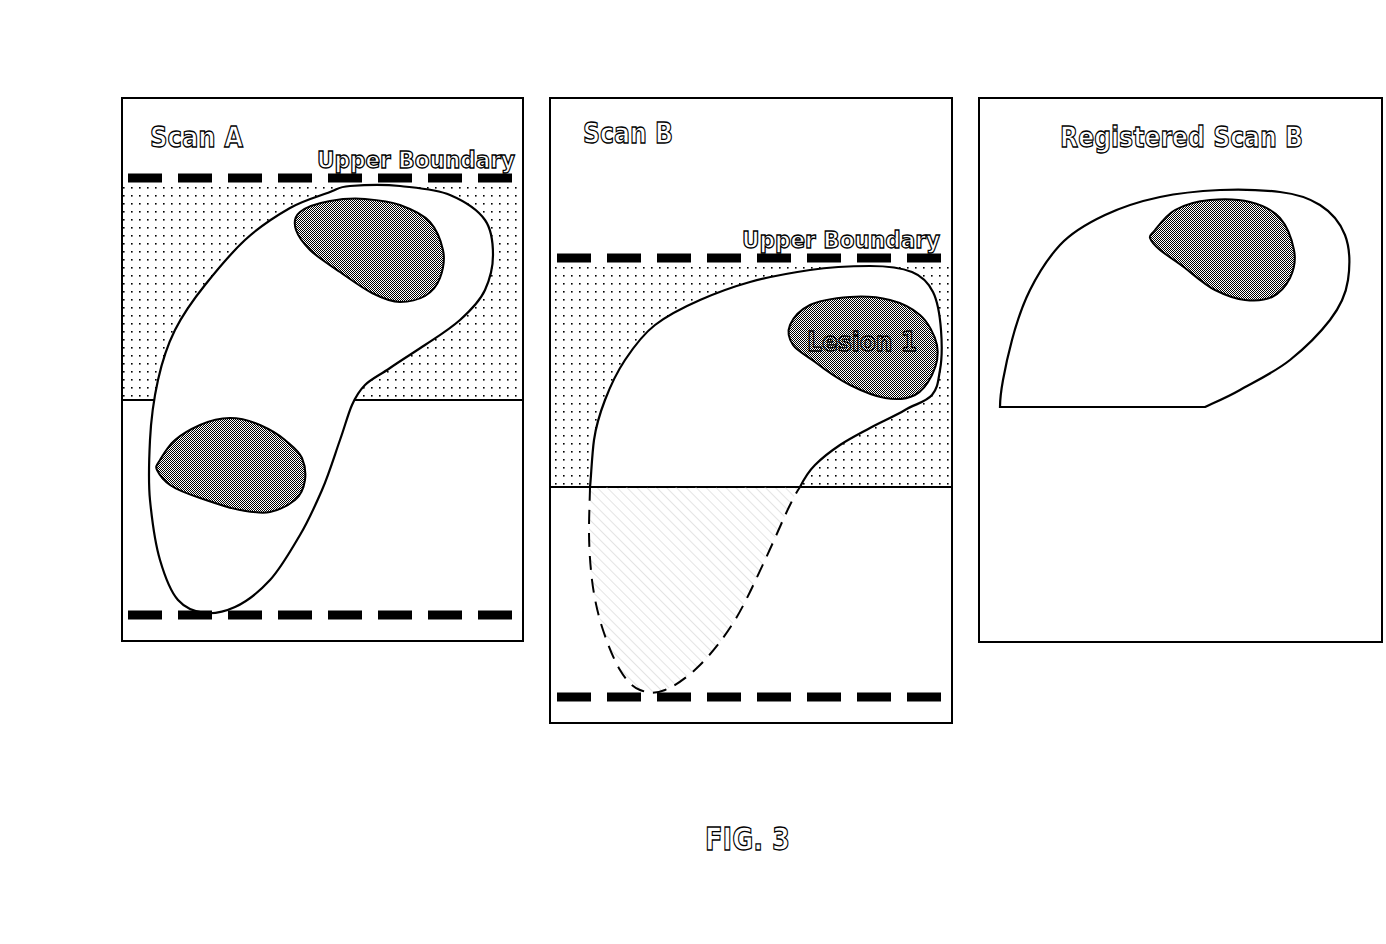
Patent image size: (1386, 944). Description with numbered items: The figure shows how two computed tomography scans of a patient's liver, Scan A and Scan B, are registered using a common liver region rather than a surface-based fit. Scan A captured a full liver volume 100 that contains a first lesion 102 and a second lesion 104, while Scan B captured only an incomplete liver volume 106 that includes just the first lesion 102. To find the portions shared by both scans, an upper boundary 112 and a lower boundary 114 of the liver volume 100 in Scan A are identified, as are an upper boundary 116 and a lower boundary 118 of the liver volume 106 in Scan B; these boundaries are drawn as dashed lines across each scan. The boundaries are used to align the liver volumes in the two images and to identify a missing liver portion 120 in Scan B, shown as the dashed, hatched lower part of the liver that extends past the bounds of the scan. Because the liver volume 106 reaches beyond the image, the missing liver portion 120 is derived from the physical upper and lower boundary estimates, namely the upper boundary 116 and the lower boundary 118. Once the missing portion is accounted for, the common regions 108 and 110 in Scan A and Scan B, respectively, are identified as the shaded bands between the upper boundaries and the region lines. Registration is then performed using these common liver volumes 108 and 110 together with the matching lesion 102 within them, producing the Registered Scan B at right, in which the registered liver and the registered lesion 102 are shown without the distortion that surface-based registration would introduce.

The full liver volume 100 is at (335, 435).
The first lesion 102 is at (401, 300).
The second lesion 104 is at (232, 512).
The incomplete liver volume 106 is at (728, 405).
The common liver region of Scan A 108 is at (180, 288).
The common liver region of Scan B 110 is at (921, 469).
The upper boundary of Scan A liver volume 112 is at (284, 157).
The lower boundary of Scan A liver volume 114 is at (297, 635).
The upper boundary of Scan B liver volume 116 is at (688, 237).
The lower boundary of Scan B liver volume 118 is at (815, 720).
The missing liver portion 120 is at (684, 539).